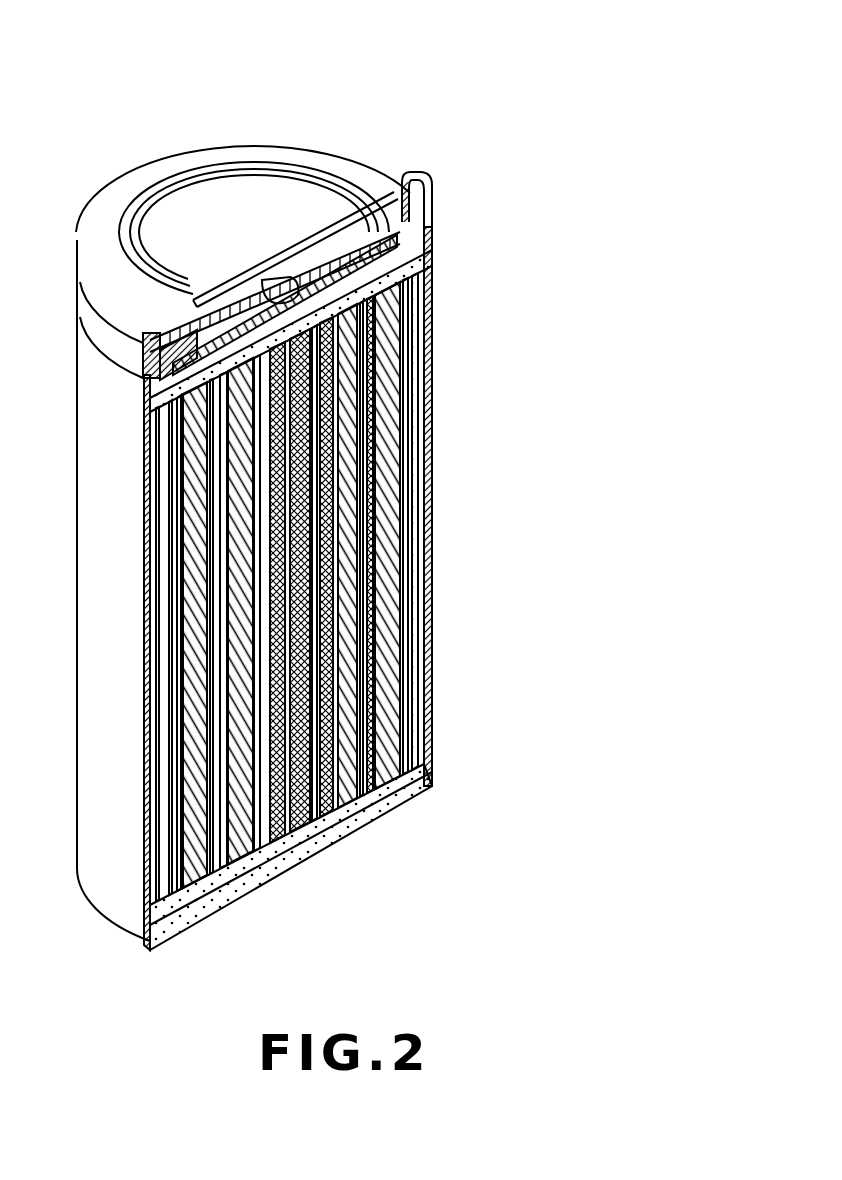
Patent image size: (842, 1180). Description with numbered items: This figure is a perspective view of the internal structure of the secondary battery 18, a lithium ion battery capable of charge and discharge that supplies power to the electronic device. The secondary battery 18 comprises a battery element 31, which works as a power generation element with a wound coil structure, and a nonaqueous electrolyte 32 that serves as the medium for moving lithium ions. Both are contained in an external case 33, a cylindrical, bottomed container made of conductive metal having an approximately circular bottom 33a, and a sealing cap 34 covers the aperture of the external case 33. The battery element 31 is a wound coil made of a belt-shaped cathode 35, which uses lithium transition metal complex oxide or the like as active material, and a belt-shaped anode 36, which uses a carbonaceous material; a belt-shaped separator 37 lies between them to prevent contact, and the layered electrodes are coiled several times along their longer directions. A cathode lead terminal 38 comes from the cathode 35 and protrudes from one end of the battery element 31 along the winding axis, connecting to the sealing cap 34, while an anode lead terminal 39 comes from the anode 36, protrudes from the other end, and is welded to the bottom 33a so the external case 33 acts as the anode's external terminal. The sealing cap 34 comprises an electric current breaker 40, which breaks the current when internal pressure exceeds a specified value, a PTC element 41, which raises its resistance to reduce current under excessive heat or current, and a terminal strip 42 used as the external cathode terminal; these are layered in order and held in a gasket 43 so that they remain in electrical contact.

The secondary battery 18 is at (525, 133).
The battery element 31 is at (436, 378).
The nonaqueous electrolyte 32 is at (122, 250).
The external case 33 is at (436, 430).
The bottom 33a is at (332, 860).
The sealing cap 34 is at (419, 83).
The cathode 35 is at (383, 650).
The anode 36 is at (405, 520).
The separator 37 is at (398, 578).
The cathode lead terminal 38 is at (398, 313).
The anode lead terminal 39 is at (247, 900).
The electric current breaker 40 is at (318, 255).
The PTC element 41 is at (383, 220).
The terminal strip 42 is at (263, 217).
The gasket 43 is at (432, 180).